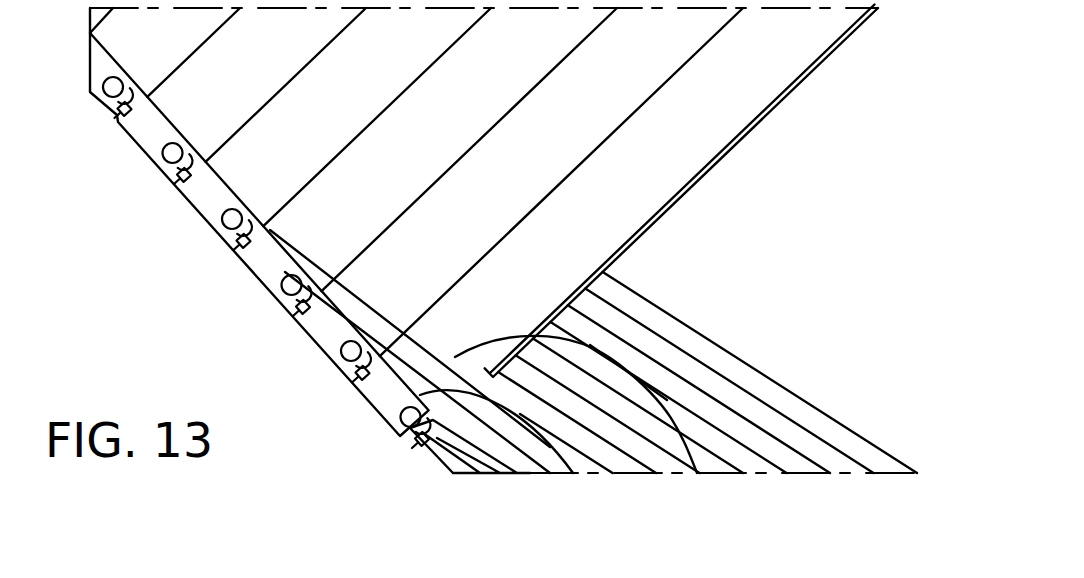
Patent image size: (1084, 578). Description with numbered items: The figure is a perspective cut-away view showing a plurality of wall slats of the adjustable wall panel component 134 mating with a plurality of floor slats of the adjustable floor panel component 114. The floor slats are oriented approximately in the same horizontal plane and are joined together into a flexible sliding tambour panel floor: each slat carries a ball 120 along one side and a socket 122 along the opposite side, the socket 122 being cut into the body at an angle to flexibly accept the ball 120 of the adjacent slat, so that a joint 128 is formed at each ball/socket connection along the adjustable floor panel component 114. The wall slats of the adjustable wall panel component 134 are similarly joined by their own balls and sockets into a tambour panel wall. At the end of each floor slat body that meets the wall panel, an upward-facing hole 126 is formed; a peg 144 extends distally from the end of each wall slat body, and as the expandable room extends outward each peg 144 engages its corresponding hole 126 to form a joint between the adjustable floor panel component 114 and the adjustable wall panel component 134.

The adjustable wall panel component 134 is at (790, 122).
The adjustable floor panel component 114 is at (785, 370).
The joint 128 is at (233, 250).
The ball 120 is at (284, 279).
The socket 122 is at (410, 417).
The hole 126 is at (567, 473).
The peg 144 is at (697, 473).